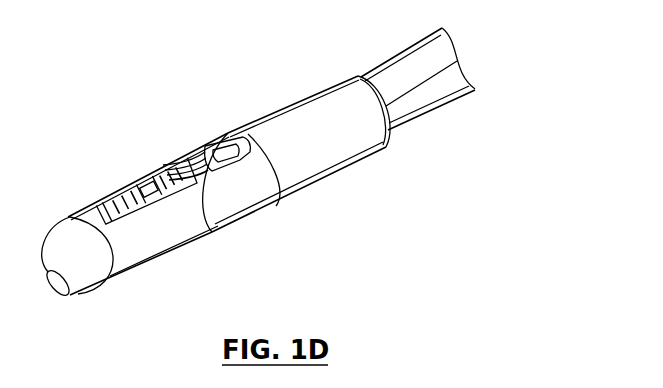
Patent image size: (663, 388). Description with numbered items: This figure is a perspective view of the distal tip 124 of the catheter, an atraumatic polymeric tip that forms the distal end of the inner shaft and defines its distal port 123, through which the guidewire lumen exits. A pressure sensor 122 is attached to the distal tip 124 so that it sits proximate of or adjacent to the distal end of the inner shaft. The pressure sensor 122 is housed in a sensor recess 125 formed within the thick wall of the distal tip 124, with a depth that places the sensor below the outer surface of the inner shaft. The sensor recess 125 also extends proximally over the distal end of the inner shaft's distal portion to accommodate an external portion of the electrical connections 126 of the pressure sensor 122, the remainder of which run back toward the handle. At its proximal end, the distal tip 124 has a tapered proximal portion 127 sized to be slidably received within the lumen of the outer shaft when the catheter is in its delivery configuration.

The pressure sensor 122 is at (157, 167).
The distal port 123 is at (56, 293).
The distal tip 124 is at (245, 115).
The sensor recess 125 is at (137, 197).
The electrical connections 126 is at (216, 143).
The tapered proximal portion 127 is at (332, 89).